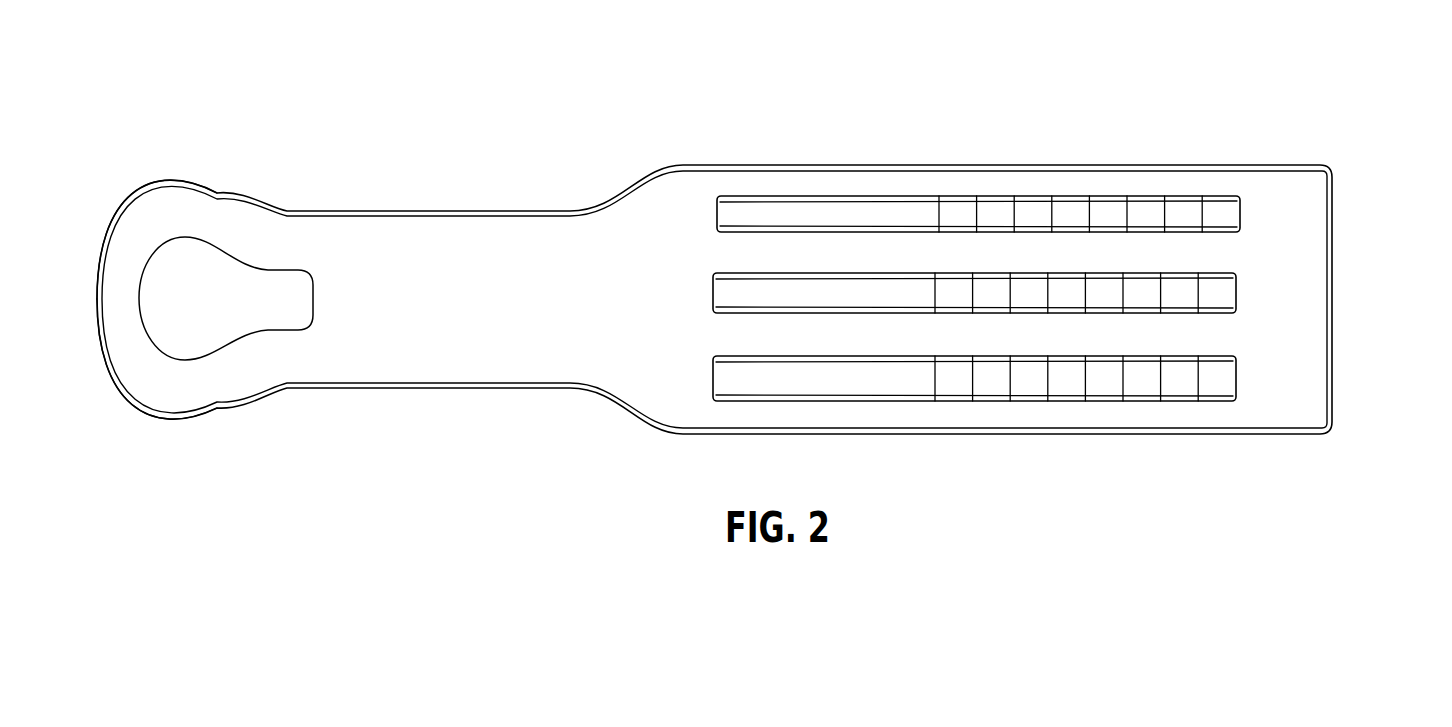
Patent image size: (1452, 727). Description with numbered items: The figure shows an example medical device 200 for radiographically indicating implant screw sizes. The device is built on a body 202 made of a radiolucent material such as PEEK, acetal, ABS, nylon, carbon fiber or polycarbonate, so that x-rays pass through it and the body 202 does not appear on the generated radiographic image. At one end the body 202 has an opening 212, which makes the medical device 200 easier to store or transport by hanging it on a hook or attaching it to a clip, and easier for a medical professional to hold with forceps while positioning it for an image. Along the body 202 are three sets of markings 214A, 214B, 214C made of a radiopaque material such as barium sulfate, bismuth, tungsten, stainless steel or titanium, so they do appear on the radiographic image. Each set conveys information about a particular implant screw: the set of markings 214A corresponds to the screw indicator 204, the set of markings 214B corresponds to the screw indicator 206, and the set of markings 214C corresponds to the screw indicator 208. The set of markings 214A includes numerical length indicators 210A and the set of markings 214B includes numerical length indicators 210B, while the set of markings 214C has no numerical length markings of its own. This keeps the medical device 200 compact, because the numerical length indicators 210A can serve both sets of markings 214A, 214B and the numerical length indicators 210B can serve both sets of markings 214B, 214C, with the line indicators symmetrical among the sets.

The medical device 200 is at (183, 149).
The body 202 is at (152, 373).
The opening 212 is at (222, 282).
The set of markings 214A is at (690, 188).
The set of markings 214B is at (690, 287).
The set of markings 214C is at (697, 392).
The screw indicator 204 is at (1320, 205).
The screw indicator 206 is at (1318, 288).
The screw indicator 208 is at (1318, 385).
The numerical length indicators 210A is at (1260, 253).
The numerical length indicators 210B is at (1255, 338).